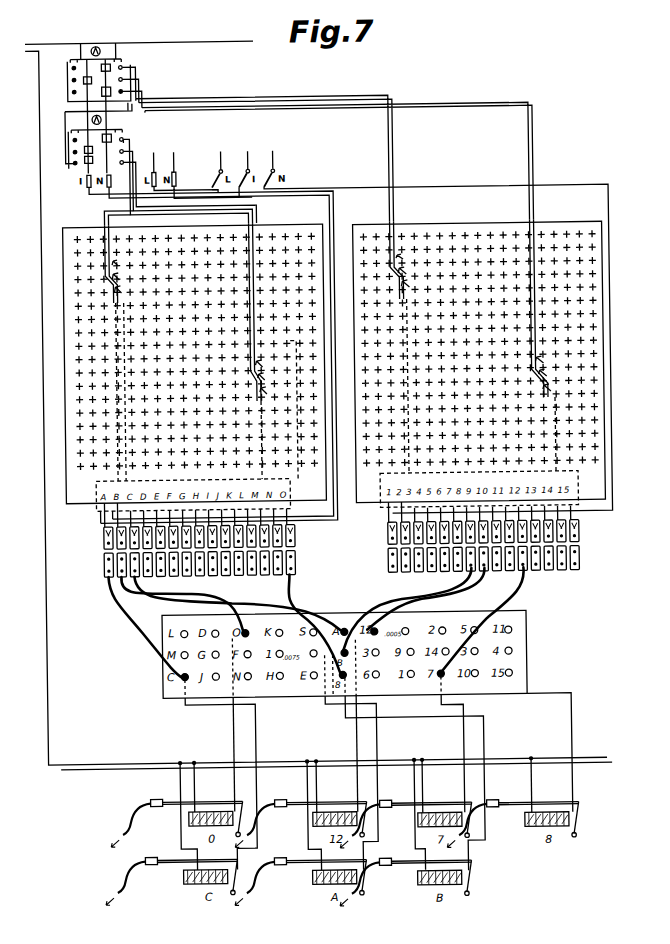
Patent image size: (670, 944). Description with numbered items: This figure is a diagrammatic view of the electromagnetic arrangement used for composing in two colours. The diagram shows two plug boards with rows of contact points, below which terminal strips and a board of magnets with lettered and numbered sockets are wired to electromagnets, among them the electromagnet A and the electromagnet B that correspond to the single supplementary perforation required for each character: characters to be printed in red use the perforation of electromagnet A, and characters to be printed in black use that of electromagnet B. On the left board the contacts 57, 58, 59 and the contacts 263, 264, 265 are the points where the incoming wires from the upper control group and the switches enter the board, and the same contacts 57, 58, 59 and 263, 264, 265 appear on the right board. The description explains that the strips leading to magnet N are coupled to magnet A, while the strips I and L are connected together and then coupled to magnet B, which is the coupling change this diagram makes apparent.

The plug board terminal contact 57 is at (262, 259).
The plug board terminal contact 58 is at (264, 273).
The plug board terminal contact 59 is at (266, 287).
The plug board terminal contact 263 is at (405, 391).
The plug board terminal contact 264 is at (410, 375).
The plug board terminal contact 265 is at (406, 362).